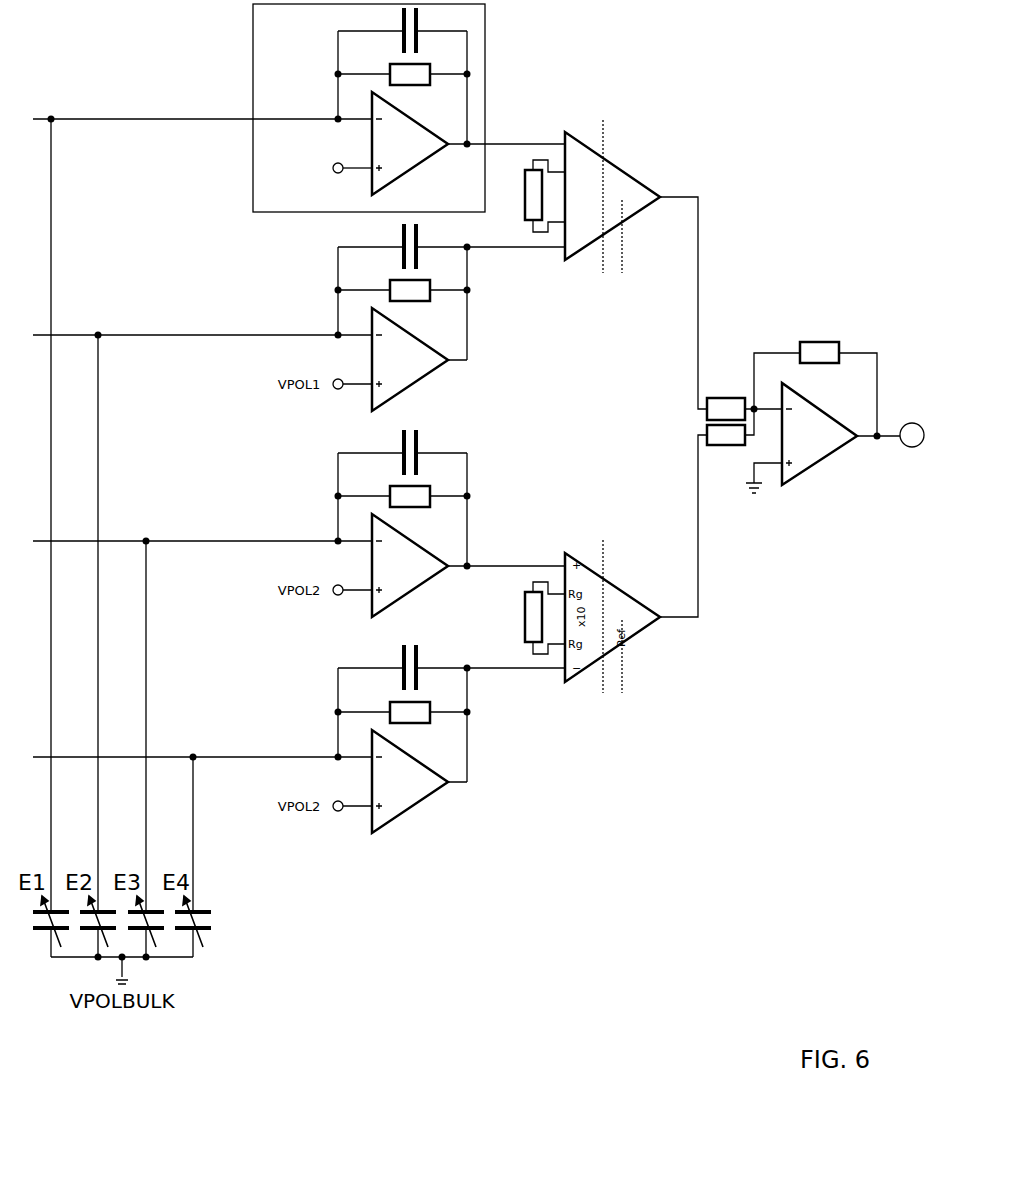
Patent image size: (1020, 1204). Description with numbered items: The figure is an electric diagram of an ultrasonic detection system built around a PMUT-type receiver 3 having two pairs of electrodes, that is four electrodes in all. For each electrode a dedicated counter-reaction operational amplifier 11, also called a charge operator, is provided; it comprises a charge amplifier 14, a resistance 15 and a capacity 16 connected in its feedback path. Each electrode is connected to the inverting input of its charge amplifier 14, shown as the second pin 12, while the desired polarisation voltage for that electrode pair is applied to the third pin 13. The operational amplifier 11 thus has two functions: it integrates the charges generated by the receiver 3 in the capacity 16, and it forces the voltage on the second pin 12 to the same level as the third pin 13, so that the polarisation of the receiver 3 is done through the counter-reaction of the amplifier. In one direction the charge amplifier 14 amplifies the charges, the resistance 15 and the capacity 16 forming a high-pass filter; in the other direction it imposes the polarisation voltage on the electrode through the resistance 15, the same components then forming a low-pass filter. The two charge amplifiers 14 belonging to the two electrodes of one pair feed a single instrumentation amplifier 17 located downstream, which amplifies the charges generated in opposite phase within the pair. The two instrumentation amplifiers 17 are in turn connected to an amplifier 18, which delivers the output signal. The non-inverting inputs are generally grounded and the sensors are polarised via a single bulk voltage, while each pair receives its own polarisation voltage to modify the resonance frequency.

The receiver 3 is at (909, 452).
The counter-reaction operational amplifier 11 is at (487, 58).
The second pin 12 is at (356, 106).
The third pin 13 is at (364, 182).
The charge amplifier 14 is at (420, 135).
The resistance 15 is at (415, 86).
The capacity 16 is at (420, 18).
The instrumentation amplifier 17 is at (617, 180).
The amplifier 18 is at (810, 437).